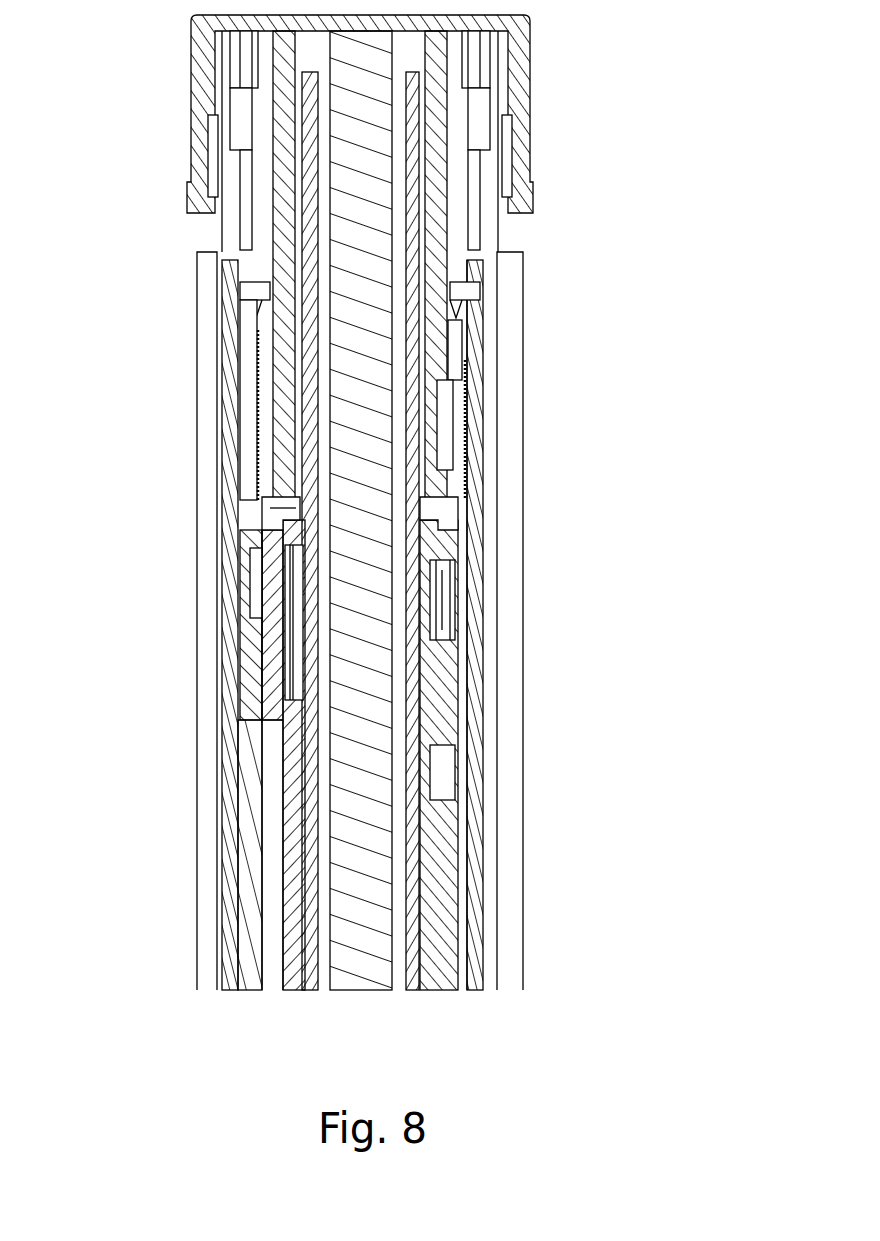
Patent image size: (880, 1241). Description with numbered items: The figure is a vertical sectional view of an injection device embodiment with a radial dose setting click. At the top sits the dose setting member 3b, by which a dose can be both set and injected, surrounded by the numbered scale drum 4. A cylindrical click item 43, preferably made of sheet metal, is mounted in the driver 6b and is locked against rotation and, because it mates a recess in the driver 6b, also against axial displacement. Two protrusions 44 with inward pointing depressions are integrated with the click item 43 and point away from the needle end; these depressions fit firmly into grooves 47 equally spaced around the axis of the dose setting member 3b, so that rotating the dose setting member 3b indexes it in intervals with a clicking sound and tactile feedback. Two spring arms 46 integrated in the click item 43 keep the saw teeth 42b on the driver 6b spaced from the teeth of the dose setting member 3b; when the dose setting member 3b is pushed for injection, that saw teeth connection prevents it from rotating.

The dose setting member 3b is at (533, 64).
The numbered scale drum 4 is at (217, 677).
The driver 6b is at (478, 676).
The saw teeth 42b is at (255, 290).
The click item 43 is at (247, 423).
The protrusions 44 is at (452, 348).
The spring arms 46 is at (270, 508).
The grooves 47 is at (440, 435).